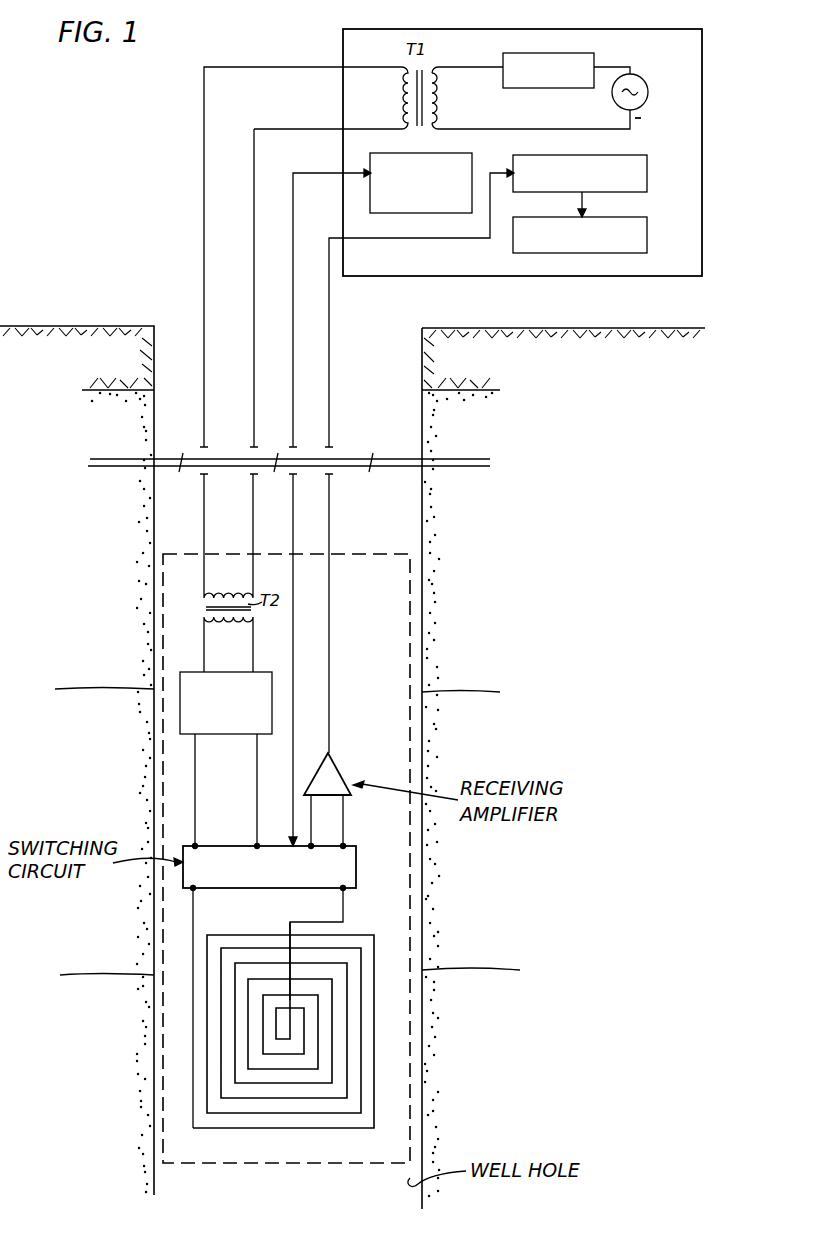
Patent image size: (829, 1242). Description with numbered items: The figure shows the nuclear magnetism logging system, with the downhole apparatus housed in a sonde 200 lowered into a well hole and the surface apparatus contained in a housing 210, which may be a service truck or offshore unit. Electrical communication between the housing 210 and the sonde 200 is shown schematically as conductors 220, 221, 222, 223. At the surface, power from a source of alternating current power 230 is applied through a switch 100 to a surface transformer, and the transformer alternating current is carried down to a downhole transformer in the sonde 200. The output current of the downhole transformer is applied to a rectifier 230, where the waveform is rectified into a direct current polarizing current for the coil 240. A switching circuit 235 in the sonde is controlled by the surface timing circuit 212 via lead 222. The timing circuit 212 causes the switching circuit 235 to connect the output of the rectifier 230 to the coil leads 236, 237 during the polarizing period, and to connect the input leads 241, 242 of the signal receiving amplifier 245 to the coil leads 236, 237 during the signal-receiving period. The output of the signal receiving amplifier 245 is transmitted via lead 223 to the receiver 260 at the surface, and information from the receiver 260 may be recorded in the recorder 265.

The switch 100 is at (565, 81).
The sonde 200 is at (411, 745).
The housing 210 is at (703, 88).
The timing circuit 212 is at (370, 157).
The conductor 220 is at (204, 197).
The conductor 221 is at (254, 216).
The lead 222 is at (293, 229).
The lead 223 is at (329, 245).
The source of alternating current power / rectifier 230 is at (645, 74).
The switching circuit 235 is at (277, 880).
The coil lead 236 is at (193, 902).
The coil lead 237 is at (343, 904).
The coil 240 is at (377, 950).
The input lead 241 is at (311, 812).
The input lead 242 is at (343, 833).
The signal receiving amplifier 245 is at (342, 778).
The receiver 260 is at (647, 179).
The recorder 265 is at (647, 244).